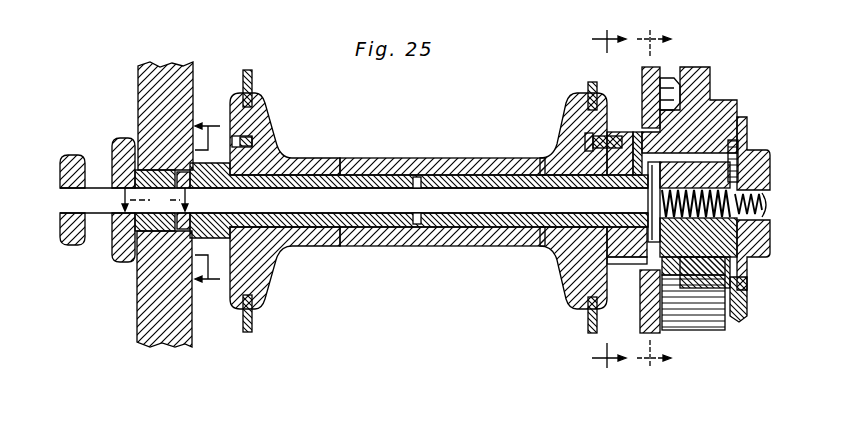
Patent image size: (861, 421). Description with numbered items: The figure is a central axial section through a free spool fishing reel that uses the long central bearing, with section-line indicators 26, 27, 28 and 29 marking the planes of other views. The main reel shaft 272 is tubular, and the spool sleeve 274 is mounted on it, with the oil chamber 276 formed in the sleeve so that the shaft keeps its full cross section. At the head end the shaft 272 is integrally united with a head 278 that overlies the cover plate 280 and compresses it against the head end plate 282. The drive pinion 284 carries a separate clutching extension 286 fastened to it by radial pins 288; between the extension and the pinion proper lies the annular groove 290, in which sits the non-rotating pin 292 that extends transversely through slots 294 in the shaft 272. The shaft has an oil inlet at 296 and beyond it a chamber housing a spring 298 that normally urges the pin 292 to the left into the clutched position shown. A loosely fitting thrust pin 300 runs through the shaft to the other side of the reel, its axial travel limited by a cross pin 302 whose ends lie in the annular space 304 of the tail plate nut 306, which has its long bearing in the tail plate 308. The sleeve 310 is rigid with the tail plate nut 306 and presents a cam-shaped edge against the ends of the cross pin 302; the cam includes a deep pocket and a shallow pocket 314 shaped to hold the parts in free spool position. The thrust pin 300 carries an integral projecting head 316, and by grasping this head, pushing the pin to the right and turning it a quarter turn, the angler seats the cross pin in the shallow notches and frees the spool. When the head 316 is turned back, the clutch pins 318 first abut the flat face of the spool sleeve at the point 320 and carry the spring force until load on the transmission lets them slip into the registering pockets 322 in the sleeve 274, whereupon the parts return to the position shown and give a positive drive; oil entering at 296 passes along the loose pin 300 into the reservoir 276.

The main reel shaft 272 is at (293, 178).
The sleeve 274 is at (372, 159).
The oil chamber 276 is at (396, 228).
The head 278 is at (756, 150).
The cover plate 280 is at (722, 108).
The head end plate 282 is at (656, 68).
The drive pinion 284 is at (746, 300).
The clutching extension 286 is at (572, 268).
The radial pins 288 is at (637, 132).
The annular groove 290 is at (638, 266).
The non-rotating pin 292 is at (662, 232).
The slots 294 is at (652, 188).
The oil inlet 296 is at (767, 220).
The spring 298 is at (690, 190).
The thrust pin 300 is at (317, 213).
The cross pin 302 is at (160, 204).
The annular space 304 is at (185, 170).
The tail plate nut 306 is at (134, 256).
The tail plate 308 is at (165, 102).
The sleeve 310 is at (114, 168).
The shallow pocket 314 is at (166, 172).
The projecting head 316 is at (64, 246).
The clutch pins 318 is at (585, 142).
The point of abutment 320 is at (588, 299).
The pockets 322 is at (272, 116).
The section line 26 is at (609, 202).
The section line 27 is at (654, 202).
The section line 28 is at (154, 198).
The section line 29 is at (211, 206).